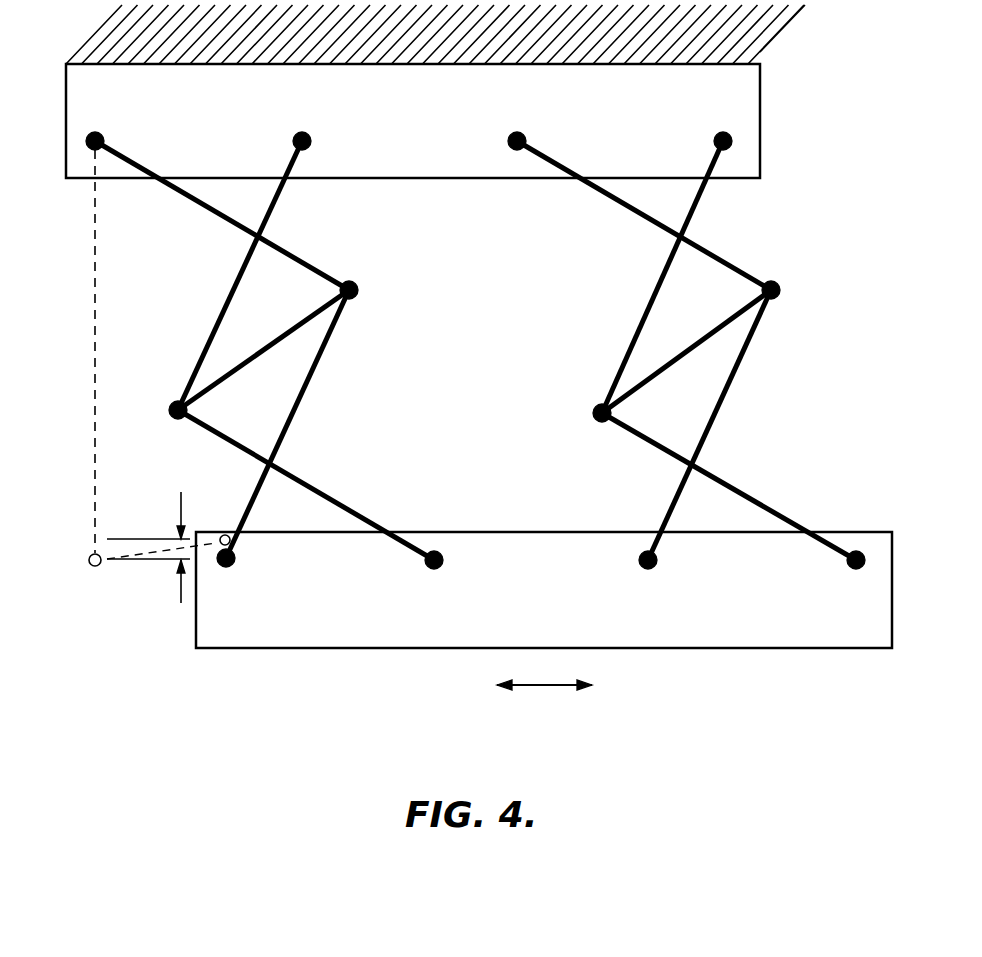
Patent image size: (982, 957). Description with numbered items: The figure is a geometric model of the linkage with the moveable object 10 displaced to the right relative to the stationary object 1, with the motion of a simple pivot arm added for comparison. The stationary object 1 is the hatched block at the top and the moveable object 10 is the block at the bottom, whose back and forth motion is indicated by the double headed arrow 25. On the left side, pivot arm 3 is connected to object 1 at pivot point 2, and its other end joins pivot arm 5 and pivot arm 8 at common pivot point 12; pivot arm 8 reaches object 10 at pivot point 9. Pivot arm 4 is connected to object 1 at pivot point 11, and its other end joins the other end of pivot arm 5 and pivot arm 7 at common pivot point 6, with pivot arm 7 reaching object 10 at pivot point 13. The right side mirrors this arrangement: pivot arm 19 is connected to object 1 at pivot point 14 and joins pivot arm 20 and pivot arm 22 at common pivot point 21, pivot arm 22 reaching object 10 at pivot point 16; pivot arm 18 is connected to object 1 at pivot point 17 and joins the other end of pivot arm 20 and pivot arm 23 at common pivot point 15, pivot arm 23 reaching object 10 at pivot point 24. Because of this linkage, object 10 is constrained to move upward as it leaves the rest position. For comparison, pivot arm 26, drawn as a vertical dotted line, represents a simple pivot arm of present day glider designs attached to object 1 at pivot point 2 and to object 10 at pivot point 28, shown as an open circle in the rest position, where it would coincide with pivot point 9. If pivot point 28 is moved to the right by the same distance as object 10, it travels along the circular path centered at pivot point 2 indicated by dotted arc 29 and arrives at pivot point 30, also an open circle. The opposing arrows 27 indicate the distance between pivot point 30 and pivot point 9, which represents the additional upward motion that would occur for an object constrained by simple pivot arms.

The stationary object 1 is at (82, 81).
The pivot point 2 is at (85, 141).
The pivot arm 3 is at (192, 205).
The pivot arm 4 is at (233, 288).
The pivot arm 5 is at (230, 372).
The common pivot point 6 is at (172, 418).
The pivot arm 7 is at (318, 488).
The pivot arm 8 is at (302, 410).
The pivot point 9 is at (228, 567).
The moveable object 10 is at (385, 632).
The pivot point 11 is at (306, 151).
The common pivot point 12 is at (358, 290).
The pivot point 13 is at (438, 548).
The pivot point 14 is at (511, 152).
The common pivot point 15 is at (597, 404).
The pivot point 16 is at (642, 552).
The pivot point 17 is at (732, 141).
The pivot arm 18 is at (700, 200).
The pivot arm 19 is at (738, 270).
The pivot arm 20 is at (710, 337).
The common pivot point 21 is at (783, 290).
The pivot arm 22 is at (717, 418).
The pivot arm 23 is at (737, 490).
The pivot point 24 is at (855, 548).
The double headed arrow 25 is at (544, 702).
The pivot arm 26 is at (95, 318).
The opposing arrows 27 is at (148, 515).
The pivot point 28 is at (88, 568).
The dotted arc 29 is at (175, 556).
The pivot point 30 is at (225, 534).